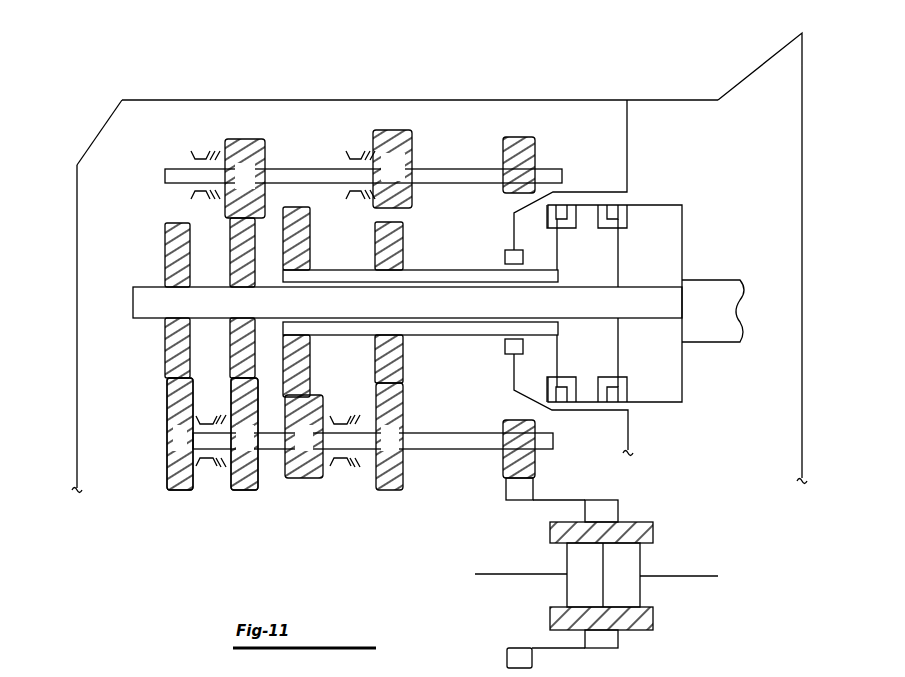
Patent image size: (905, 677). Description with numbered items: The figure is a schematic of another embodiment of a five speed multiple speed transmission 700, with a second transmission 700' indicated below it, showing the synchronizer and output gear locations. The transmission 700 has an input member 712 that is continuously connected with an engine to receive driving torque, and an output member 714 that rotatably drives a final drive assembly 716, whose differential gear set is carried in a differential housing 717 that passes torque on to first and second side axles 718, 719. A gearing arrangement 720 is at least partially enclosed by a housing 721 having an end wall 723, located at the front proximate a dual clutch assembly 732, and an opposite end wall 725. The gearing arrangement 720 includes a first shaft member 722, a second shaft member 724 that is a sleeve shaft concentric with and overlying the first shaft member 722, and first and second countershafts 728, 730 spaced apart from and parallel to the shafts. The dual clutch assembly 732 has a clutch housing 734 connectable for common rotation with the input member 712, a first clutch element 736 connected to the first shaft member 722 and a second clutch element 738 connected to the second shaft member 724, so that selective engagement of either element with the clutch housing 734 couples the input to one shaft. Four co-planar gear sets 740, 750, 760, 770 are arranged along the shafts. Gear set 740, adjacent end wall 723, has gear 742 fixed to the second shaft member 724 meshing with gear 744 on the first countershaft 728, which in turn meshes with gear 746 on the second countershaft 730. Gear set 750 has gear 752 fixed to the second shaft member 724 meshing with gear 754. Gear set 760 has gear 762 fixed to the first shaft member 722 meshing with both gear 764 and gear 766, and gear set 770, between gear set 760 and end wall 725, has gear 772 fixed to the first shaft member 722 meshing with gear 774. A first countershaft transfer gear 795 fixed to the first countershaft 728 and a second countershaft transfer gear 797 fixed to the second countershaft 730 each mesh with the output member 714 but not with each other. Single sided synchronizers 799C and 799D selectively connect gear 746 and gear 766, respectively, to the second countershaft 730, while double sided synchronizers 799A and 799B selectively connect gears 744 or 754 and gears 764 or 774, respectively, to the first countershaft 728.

The multiple speed transmission 700 is at (435, 338).
The second transmission 700' is at (824, 656).
The input shaft or member 712 is at (700, 280).
The output gear or member 714 is at (517, 487).
The final drive assembly 716 is at (674, 497).
The differential housing 717 is at (618, 640).
The first side axle 718 is at (702, 576).
The second side axle 719 is at (477, 574).
The gearing arrangement 720 is at (156, 52).
The housing 721 is at (663, 100).
The first transmission input shaft or member 722 is at (583, 287).
The end wall 723 is at (627, 164).
The second transmission input shaft or member 724 is at (488, 268).
The end wall 725 is at (76, 195).
The first countershaft 728 is at (465, 433).
The second countershaft 730 is at (439, 170).
The dual clutch assembly 732 is at (688, 190).
The clutch housing 734 is at (683, 386).
The first clutch element or hub 736 is at (618, 362).
The second clutch element or hub 738 is at (558, 350).
The co-planar gear set 740 is at (406, 478).
The gear 742 is at (401, 238).
The gear 744 is at (404, 418).
The gear 746 is at (410, 145).
The co-planar gear set 750 is at (306, 480).
The gear 752 is at (312, 250).
The gear 754 is at (314, 392).
The co-planar gear set 760 is at (234, 494).
The gear 762 is at (234, 236).
The gear 764 is at (256, 491).
The gear 766 is at (262, 161).
The co-planar gear set 770 is at (164, 492).
The gear 772 is at (165, 256).
The gear 774 is at (168, 410).
The first countershaft transfer gear 795 is at (530, 465).
The second countershaft transfer gear 797 is at (535, 138).
The synchronizer assembly 799A is at (340, 470).
The synchronizer assembly 799B is at (210, 470).
The synchronizer assembly 799C is at (353, 135).
The synchronizer assembly 799D is at (203, 153).